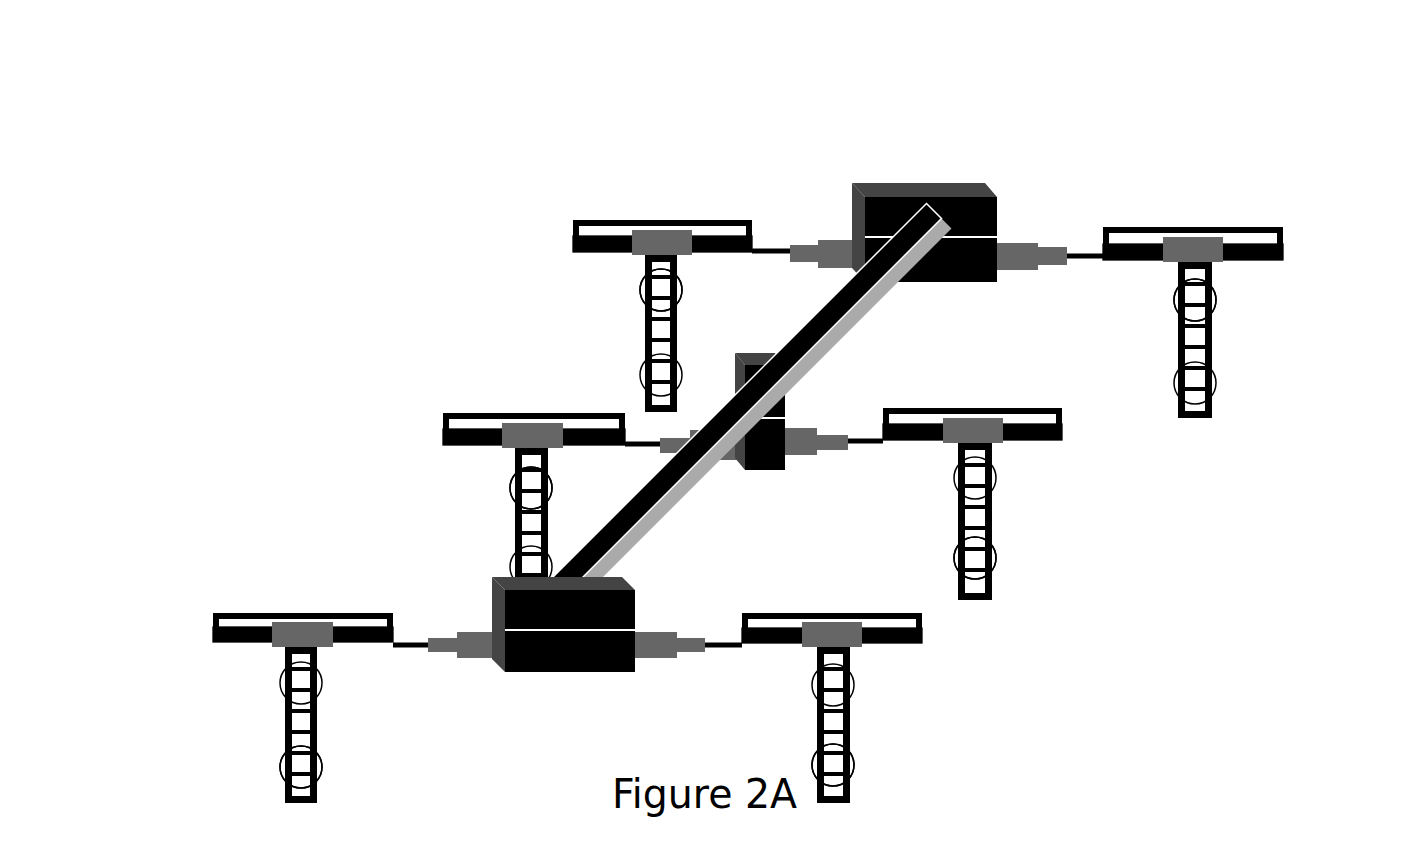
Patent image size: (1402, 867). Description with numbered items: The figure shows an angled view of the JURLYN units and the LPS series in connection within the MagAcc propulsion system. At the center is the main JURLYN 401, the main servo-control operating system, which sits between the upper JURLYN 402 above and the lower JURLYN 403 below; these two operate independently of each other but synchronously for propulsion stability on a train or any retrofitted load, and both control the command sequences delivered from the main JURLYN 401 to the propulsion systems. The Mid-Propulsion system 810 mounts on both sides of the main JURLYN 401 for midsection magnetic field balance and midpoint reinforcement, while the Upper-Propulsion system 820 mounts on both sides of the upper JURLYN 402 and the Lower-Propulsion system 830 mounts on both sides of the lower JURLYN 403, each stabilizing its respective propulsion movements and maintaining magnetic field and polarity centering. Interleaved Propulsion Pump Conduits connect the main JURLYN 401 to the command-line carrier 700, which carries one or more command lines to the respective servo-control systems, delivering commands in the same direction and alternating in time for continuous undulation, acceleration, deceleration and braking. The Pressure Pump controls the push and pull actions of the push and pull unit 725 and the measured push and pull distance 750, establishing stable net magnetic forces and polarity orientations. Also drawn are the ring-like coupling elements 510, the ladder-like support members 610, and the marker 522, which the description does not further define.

The JURLYN Main-1 401 is at (740, 478).
The JURLYN 1a 402 is at (938, 181).
The JURLYN 1b 403 is at (572, 677).
The coupling rings 510 is at (685, 344).
The sheet marker 522 is at (1179, 31).
The ladder support 610 is at (638, 346).
The command-line carrier 700 is at (802, 240).
The push and pull unit 725 is at (627, 256).
The measured push and pull distance 750 is at (575, 222).
The Mid-Propulsion system 810 is at (505, 484).
The Upper-Propulsion system 820 is at (622, 290).
The Lower-Propulsion system 830 is at (330, 766).